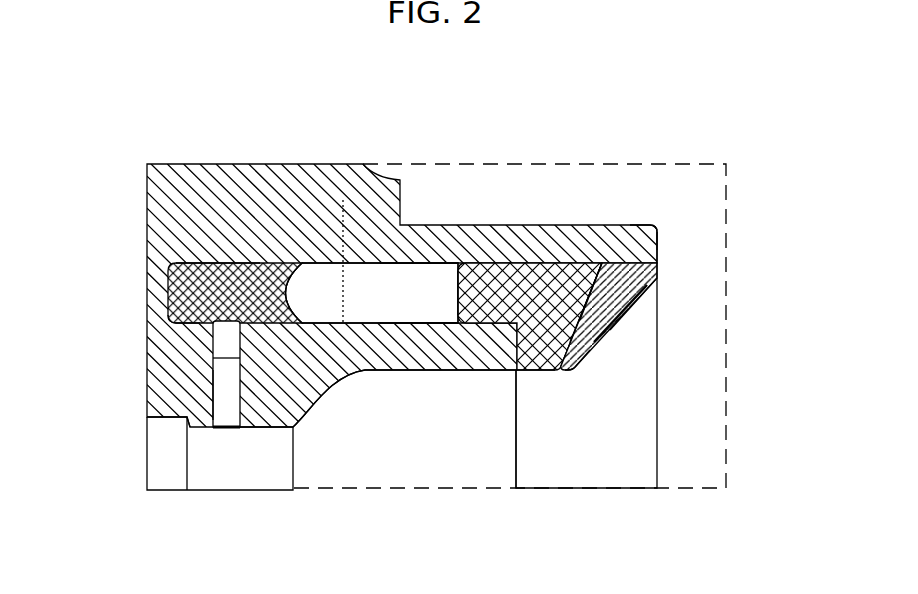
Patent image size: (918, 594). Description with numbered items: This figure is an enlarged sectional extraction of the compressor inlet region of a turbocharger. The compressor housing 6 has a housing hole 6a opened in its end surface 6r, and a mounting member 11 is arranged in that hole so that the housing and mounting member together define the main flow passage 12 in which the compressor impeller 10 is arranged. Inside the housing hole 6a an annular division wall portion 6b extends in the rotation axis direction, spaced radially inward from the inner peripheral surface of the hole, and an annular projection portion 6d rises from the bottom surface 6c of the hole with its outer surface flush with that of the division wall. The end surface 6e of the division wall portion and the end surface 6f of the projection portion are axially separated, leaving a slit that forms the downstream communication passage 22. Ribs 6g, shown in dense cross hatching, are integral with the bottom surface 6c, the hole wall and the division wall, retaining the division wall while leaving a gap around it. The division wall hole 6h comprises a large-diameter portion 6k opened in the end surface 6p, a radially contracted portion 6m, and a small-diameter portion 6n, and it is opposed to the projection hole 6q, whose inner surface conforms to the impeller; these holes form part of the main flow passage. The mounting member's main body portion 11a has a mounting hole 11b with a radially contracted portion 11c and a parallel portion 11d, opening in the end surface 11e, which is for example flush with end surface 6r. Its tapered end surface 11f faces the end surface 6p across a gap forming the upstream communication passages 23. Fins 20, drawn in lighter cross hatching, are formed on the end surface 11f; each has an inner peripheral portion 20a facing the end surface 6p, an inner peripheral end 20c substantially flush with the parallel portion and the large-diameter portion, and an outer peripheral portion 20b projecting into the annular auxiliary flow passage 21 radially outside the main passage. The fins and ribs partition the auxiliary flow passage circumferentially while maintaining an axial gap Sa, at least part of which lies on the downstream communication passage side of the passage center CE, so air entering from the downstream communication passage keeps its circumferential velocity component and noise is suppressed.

The compressor housing 6 is at (173, 165).
The housing hole 6a is at (218, 298).
The division wall portion 6b is at (425, 322).
The bottom surface 6c is at (178, 281).
The projection portion 6d is at (178, 316).
The end surface of division wall portion 6e is at (217, 358).
The end surface of projection portion 6f is at (214, 394).
The ribs 6g is at (288, 293).
The division wall hole 6h is at (410, 371).
The large-diameter portion 6k is at (460, 371).
The radially contracted portion 6m is at (327, 393).
The small-diameter portion 6n is at (273, 428).
The end surface of division wall portion 6p is at (524, 371).
The projection hole 6q is at (178, 430).
The end surface of compressor housing 6r is at (658, 245).
The compressor impeller 10 is at (260, 473).
The mounting member 11 is at (658, 318).
The main body portion 11a is at (658, 250).
The mounting hole 11b is at (571, 342).
The radially contracted portion 11c is at (610, 330).
The parallel portion 11d is at (572, 371).
The end surface of mounting member 11e is at (658, 275).
The end surface of main body portion 11f is at (565, 337).
The main flow passage 12 is at (623, 440).
The fins 20 is at (552, 288).
The inner peripheral portion 20a is at (553, 371).
The outer peripheral portion 20b is at (490, 290).
The inner peripheral end 20c is at (545, 371).
The auxiliary flow passage 21 is at (415, 300).
The downstream communication passage 22 is at (227, 338).
The upstream communication passage 23 is at (648, 226).
The center of auxiliary flow passage CE is at (343, 200).
The gap Sa is at (373, 300).